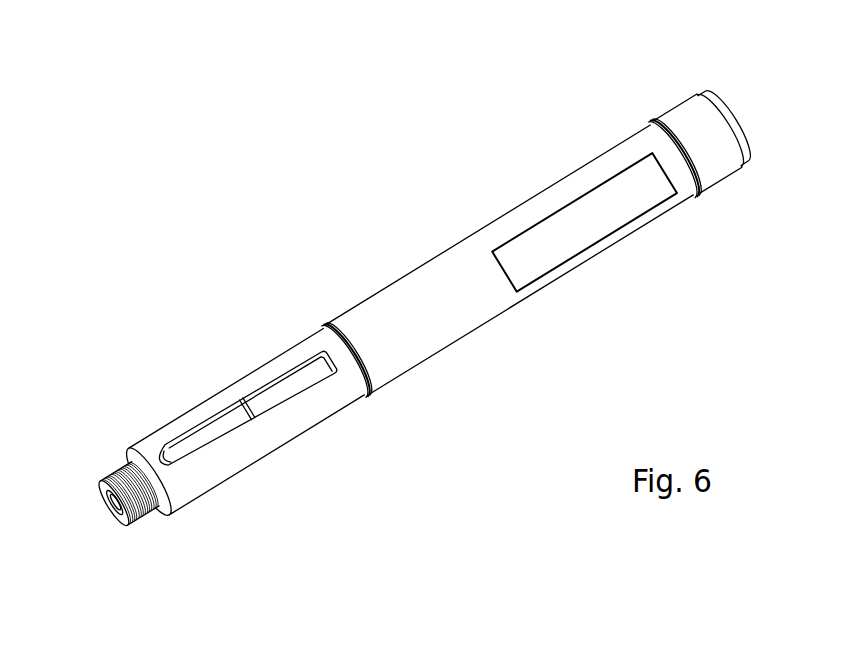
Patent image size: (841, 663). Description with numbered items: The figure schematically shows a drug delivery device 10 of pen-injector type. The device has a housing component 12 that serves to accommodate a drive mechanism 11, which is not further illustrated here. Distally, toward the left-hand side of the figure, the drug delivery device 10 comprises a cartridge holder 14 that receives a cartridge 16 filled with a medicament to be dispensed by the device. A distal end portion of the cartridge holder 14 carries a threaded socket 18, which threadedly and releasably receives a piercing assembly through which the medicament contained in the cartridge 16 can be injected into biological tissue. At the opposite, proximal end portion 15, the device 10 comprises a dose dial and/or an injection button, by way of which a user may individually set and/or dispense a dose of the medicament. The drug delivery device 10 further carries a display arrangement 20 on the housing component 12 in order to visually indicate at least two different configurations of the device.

The drug delivery device 10 is at (366, 158).
The drive mechanism 11 is at (333, 312).
The housing component 12 is at (547, 207).
The cartridge holder 14 is at (205, 476).
The proximal end portion 15 is at (757, 87).
The cartridge 16 is at (212, 433).
The threaded socket 18 is at (116, 471).
The display arrangement 20 is at (603, 232).